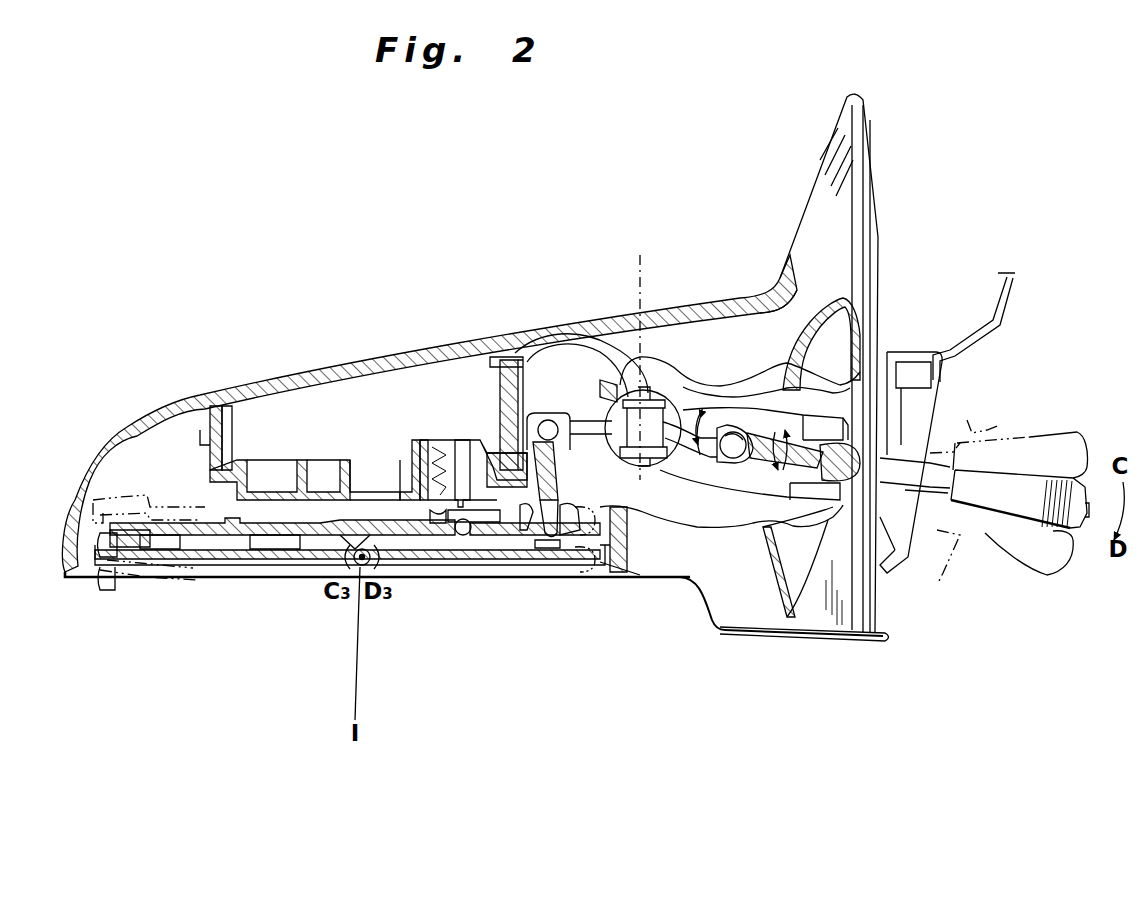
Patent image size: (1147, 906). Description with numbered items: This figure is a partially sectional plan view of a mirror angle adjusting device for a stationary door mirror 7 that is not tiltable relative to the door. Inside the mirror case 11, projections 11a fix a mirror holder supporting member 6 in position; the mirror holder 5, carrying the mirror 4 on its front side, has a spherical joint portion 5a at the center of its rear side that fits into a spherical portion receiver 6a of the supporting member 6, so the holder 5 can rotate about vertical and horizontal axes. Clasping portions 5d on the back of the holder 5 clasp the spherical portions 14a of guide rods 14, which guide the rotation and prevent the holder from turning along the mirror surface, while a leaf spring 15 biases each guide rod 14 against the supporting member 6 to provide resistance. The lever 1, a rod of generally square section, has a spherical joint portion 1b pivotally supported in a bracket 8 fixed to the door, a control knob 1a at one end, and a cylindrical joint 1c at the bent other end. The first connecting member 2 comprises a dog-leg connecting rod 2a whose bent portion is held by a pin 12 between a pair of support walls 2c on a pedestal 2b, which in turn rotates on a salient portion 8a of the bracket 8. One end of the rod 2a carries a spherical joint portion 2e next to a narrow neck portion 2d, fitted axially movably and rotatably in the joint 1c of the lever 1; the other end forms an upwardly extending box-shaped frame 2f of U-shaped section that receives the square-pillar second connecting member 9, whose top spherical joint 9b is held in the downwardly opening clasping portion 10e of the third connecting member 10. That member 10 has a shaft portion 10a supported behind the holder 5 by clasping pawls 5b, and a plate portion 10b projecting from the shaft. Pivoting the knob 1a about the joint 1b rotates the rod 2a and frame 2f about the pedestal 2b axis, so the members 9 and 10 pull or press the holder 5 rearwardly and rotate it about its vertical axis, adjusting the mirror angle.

The lever 1 is at (987, 517).
The lever control knob 1a is at (1052, 535).
The spherical joint portion 1b is at (860, 485).
The cylindrical joint 1c is at (775, 320).
The first connecting member 2 is at (700, 385).
The connecting rod 2a is at (683, 388).
The pedestal 2b is at (607, 395).
The support walls 2c is at (645, 388).
The narrow neck portion 2d is at (700, 470).
The spherical joint portion 2e is at (735, 480).
The box-shaped frame 2f is at (574, 400).
The mirror 4 is at (258, 562).
The mirror holder 5 is at (223, 566).
The spherical joint portion 5a is at (345, 535).
The clasping pawls 5b is at (538, 535).
The clasping portions 5d is at (450, 522).
The mirror holder supporting member 6 is at (432, 438).
The spherical portion receiver 6a is at (350, 467).
The door mirror 7 is at (679, 258).
The bracket 8 is at (840, 650).
The salient portion 8a is at (855, 495).
The second connecting member 9 is at (562, 448).
The spherical joint 9b is at (553, 420).
The third connecting member 10 is at (572, 535).
The shaft portion 10a is at (552, 533).
The plate portion 10b is at (522, 525).
The clasping portion 10e is at (547, 418).
The mirror case 11 is at (213, 407).
The projections 11a is at (200, 440).
The pin 12 is at (634, 352).
The guide rods 14 is at (462, 440).
The spherical portion 14a is at (466, 535).
The leaf spring 15 is at (425, 522).